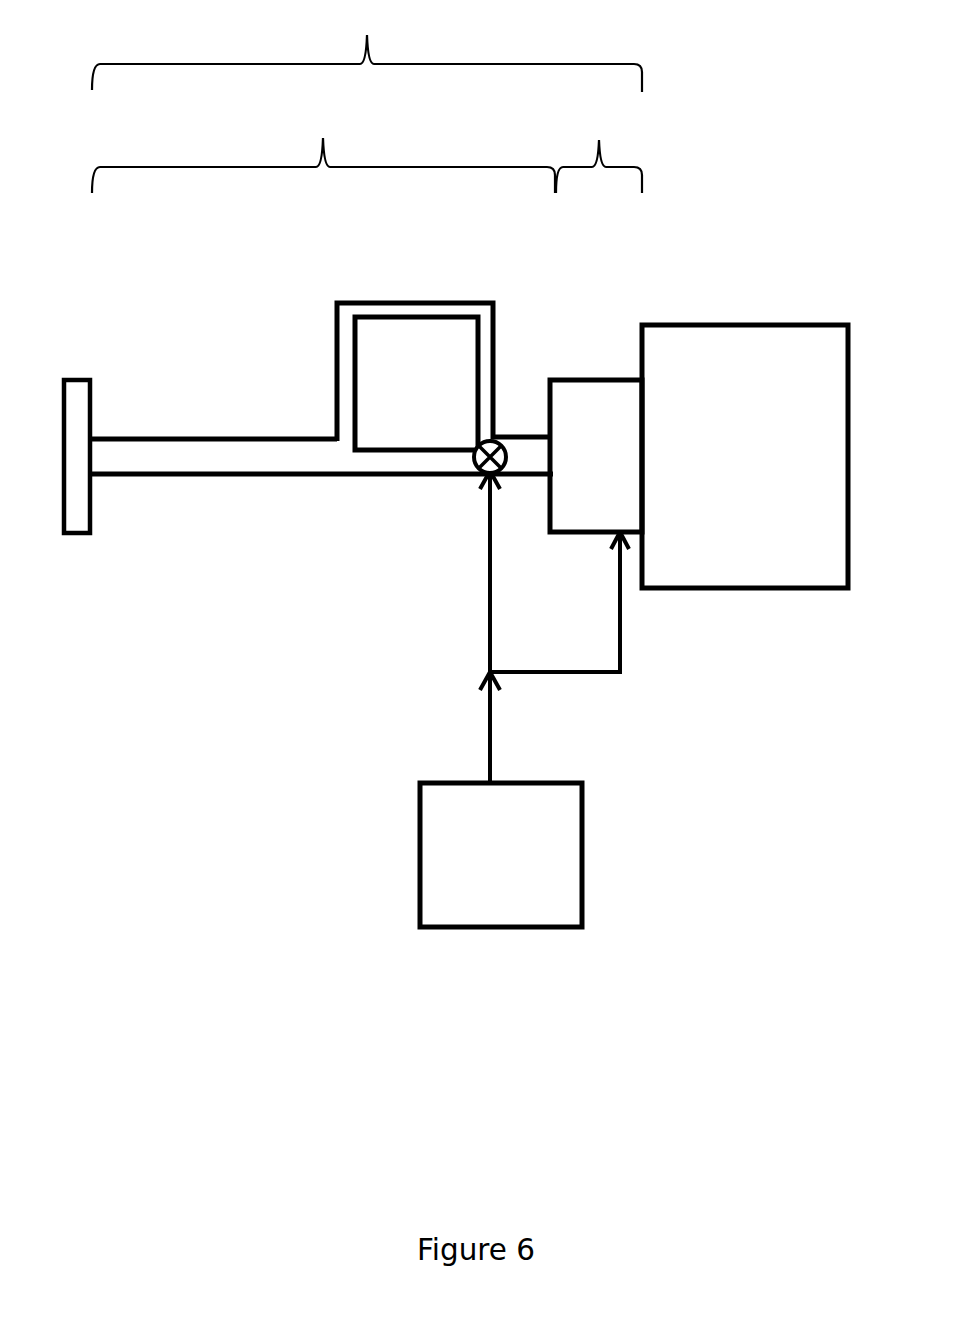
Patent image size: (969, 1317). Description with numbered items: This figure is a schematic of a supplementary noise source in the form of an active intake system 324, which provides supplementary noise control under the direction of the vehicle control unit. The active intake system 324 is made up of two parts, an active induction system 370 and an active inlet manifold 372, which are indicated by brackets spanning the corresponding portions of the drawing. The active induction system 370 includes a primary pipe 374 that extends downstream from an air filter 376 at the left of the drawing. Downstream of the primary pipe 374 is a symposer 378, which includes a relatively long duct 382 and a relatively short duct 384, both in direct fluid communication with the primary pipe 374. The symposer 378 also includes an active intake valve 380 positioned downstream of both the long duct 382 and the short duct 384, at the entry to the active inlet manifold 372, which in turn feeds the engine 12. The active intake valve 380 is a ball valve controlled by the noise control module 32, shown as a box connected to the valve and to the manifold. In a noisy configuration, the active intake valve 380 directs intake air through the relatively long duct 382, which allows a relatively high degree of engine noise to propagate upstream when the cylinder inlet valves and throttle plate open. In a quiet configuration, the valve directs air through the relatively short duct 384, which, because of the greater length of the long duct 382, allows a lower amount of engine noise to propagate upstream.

The engine 12 is at (737, 355).
The noise control module 32 is at (582, 851).
The active intake system 324 is at (367, 47).
The active induction system 370 is at (323, 149).
The active inlet manifold 372 is at (599, 151).
The primary pipe 374 is at (200, 458).
The air filter 376 is at (79, 520).
The symposer 378 is at (477, 243).
The active intake valve 380 is at (480, 474).
The relatively long duct 382 is at (338, 336).
The relatively short duct 384 is at (378, 462).